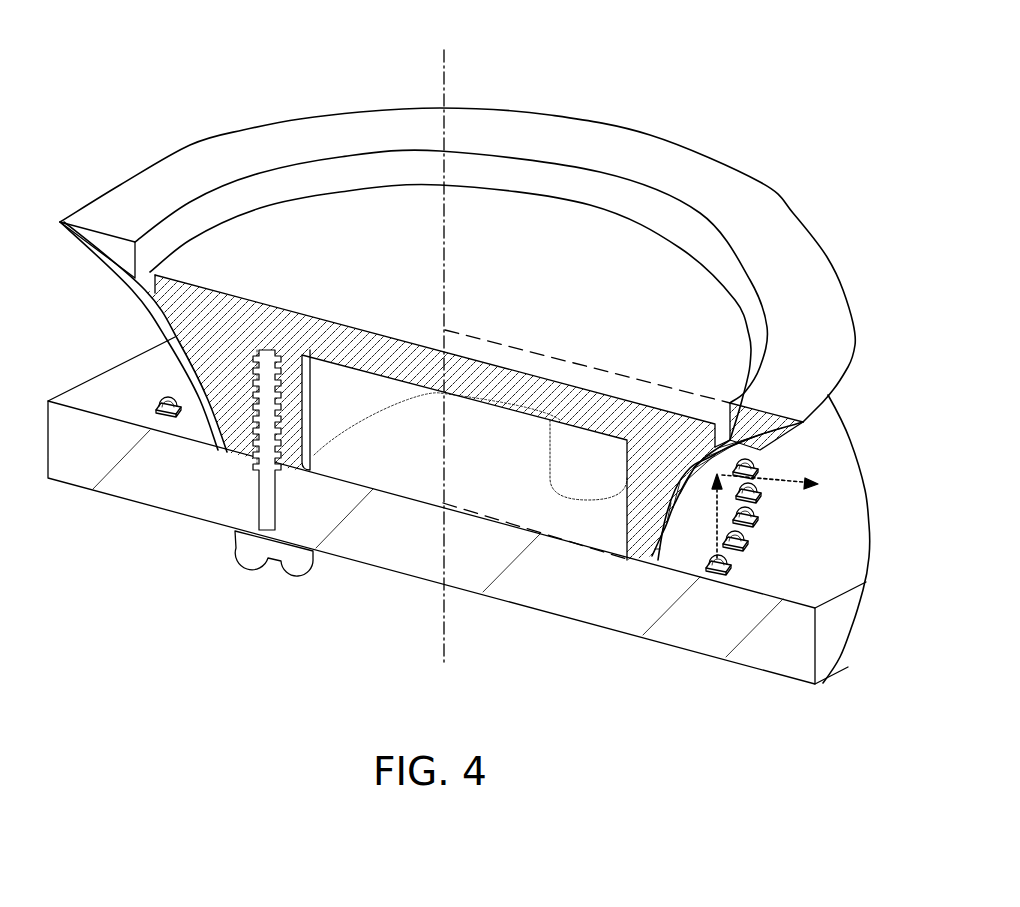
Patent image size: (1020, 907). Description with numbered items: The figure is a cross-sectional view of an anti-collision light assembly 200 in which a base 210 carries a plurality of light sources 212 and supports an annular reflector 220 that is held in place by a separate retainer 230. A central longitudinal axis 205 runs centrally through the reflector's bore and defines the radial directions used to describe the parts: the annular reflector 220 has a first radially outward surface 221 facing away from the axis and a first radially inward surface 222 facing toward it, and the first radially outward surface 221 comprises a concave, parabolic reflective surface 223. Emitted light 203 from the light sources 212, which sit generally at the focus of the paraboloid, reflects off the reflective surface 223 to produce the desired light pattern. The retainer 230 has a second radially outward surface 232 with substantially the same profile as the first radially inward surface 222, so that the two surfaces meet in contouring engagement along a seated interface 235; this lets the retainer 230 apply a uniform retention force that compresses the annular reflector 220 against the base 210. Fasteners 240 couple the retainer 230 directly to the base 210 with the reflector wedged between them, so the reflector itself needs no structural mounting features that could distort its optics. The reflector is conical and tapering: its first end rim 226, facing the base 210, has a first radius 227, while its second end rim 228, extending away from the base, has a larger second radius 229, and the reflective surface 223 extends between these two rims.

The light assembly 200 is at (118, 77).
The emitted light 203 is at (790, 483).
The central longitudinal axis 205 is at (442, 90).
The base 210 is at (428, 566).
The light sources 212 is at (752, 546).
The annular reflector 220 is at (575, 137).
The first radially outward surface 221 is at (188, 372).
The first radially inward surface 222 is at (175, 345).
The reflective surface 223 is at (720, 525).
The first end rim 226 is at (685, 520).
The first radius 227 is at (470, 510).
The second end rim 228 is at (763, 423).
The second radius 229 is at (583, 357).
The retainer 230 is at (598, 245).
The second radially outward surface 232 is at (180, 350).
The seated interface 235 is at (213, 409).
The fasteners 240 is at (262, 532).